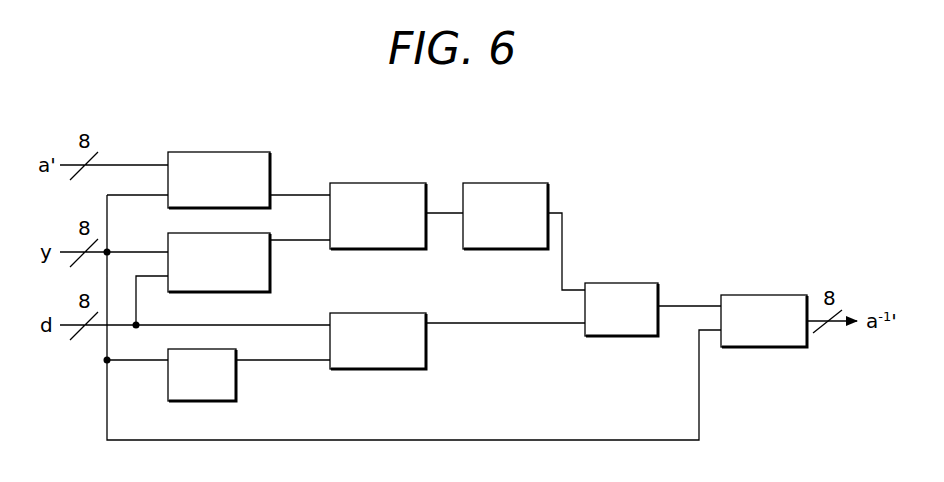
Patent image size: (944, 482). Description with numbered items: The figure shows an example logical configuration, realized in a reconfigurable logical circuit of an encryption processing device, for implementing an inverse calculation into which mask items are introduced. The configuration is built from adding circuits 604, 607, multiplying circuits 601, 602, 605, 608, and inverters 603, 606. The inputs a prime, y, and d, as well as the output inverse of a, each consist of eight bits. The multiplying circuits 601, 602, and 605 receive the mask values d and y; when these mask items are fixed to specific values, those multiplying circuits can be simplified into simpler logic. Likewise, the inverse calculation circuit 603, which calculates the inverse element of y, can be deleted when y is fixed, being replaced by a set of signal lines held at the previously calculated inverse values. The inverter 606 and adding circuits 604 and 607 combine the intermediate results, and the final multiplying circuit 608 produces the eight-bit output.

The multiplying circuit 601 is at (232, 152).
The multiplying circuit 602 is at (270, 270).
The inverter 603 is at (236, 383).
The adding circuit 604 is at (396, 183).
The multiplying circuit 605 is at (396, 313).
The inverter 606 is at (524, 183).
The adding circuit 607 is at (634, 283).
The multiplying circuit 608 is at (781, 295).